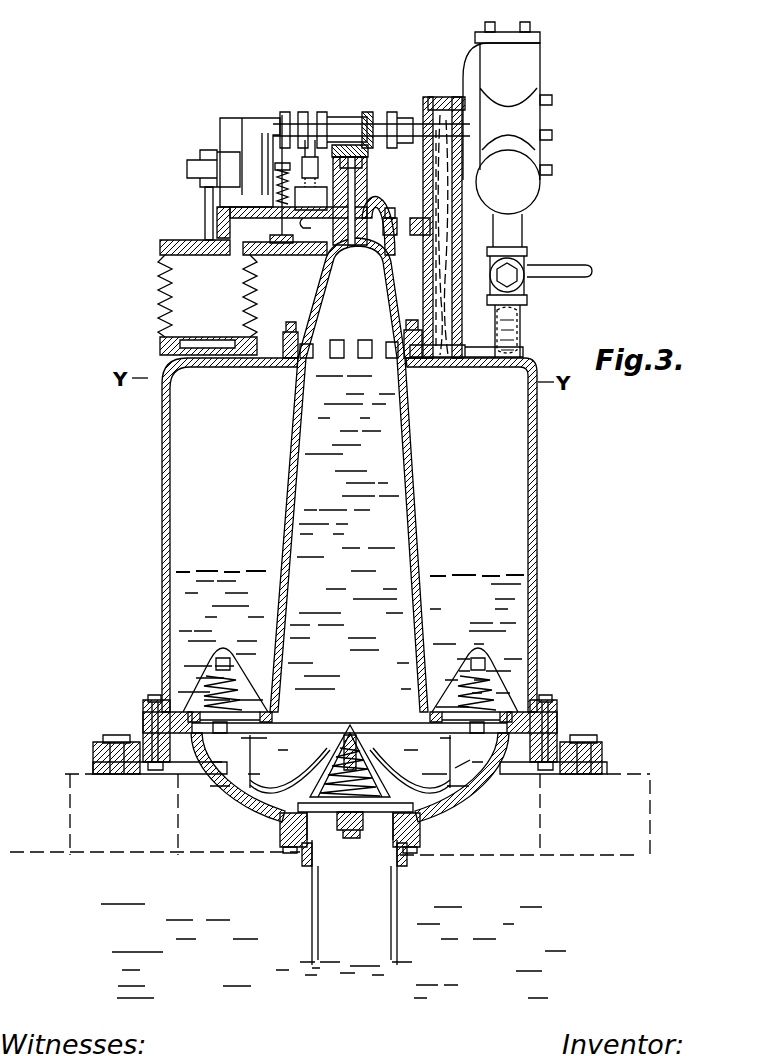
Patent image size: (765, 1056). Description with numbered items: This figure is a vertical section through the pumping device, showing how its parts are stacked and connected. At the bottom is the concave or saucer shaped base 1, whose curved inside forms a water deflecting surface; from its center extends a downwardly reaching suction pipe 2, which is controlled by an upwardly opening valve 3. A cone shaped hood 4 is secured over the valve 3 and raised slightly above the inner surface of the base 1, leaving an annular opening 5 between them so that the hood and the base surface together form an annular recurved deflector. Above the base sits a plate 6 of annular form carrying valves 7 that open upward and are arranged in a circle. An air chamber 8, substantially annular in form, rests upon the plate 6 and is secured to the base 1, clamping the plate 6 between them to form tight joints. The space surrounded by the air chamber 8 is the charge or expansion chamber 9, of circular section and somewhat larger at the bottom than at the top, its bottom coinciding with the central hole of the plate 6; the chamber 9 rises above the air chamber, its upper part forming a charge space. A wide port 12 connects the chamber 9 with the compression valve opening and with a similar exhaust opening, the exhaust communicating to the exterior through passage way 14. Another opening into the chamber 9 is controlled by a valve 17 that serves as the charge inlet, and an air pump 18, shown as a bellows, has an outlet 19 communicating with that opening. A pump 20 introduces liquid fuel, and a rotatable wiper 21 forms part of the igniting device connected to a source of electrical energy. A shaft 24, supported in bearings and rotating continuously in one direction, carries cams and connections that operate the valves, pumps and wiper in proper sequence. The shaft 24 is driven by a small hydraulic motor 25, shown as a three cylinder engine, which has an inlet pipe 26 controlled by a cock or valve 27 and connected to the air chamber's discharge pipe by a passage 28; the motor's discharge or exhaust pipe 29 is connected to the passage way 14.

The concave or saucer shaped base 1 is at (478, 796).
The suction pipe 2 is at (356, 907).
The upwardly opening valve 3 is at (334, 846).
The cone shaped hood 4 is at (378, 762).
The annular opening 5 is at (463, 774).
The valve plate 6 is at (557, 730).
The valves 7 is at (160, 673).
The air chamber 8 is at (349, 528).
The charge or expansion chamber 9 is at (349, 475).
The port 12 is at (363, 348).
The passage way 14 is at (433, 386).
The charge inlet valve 17 is at (296, 255).
The air pump 18 is at (207, 297).
The outlet 19 is at (277, 179).
The pump 20 is at (311, 175).
The rotatable wiper 21 is at (381, 200).
The shaft 24 is at (354, 118).
The hydraulic motor 25 is at (545, 126).
The inlet pipe 26 is at (528, 235).
The cock or valve 27 is at (528, 296).
The passage 28 is at (499, 386).
The discharge or exhaust pipe 29 is at (462, 237).